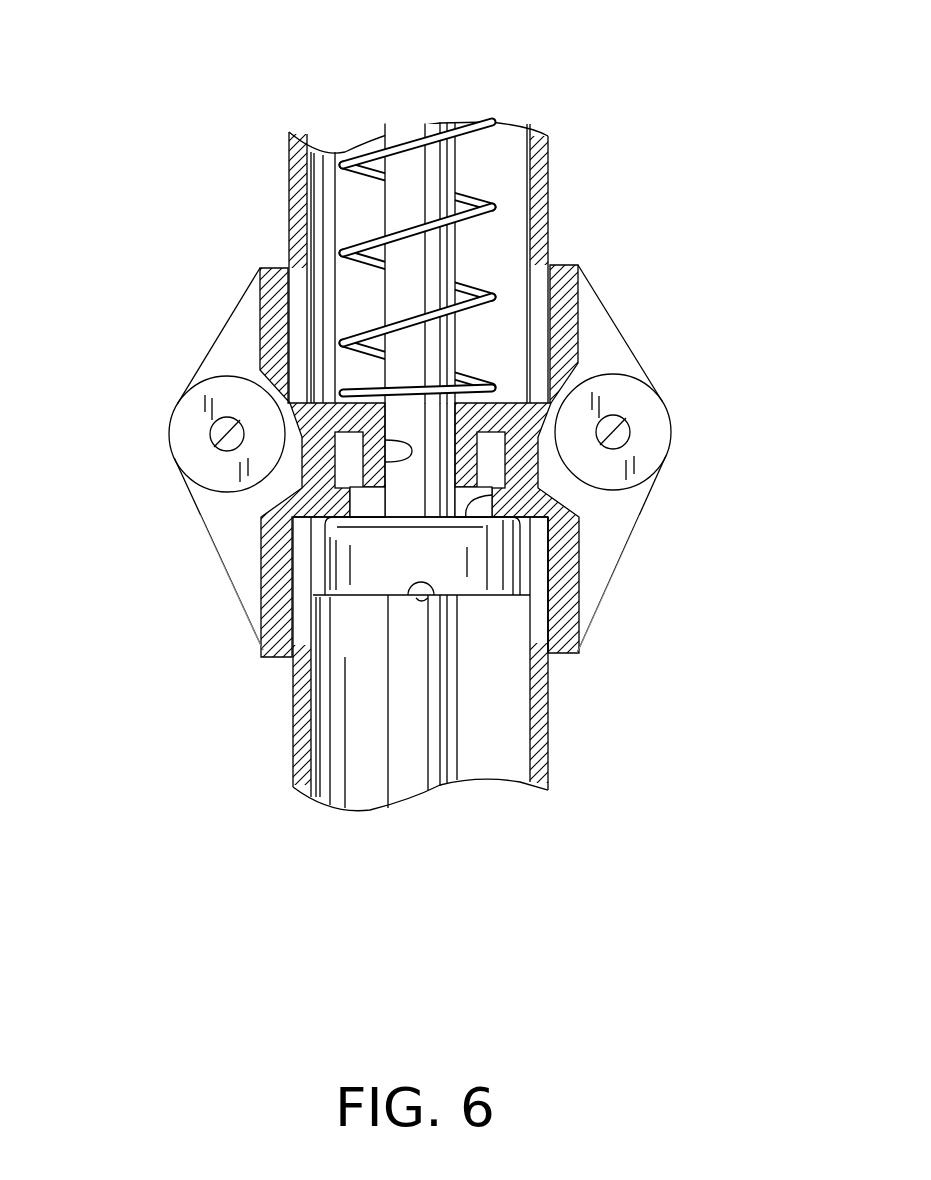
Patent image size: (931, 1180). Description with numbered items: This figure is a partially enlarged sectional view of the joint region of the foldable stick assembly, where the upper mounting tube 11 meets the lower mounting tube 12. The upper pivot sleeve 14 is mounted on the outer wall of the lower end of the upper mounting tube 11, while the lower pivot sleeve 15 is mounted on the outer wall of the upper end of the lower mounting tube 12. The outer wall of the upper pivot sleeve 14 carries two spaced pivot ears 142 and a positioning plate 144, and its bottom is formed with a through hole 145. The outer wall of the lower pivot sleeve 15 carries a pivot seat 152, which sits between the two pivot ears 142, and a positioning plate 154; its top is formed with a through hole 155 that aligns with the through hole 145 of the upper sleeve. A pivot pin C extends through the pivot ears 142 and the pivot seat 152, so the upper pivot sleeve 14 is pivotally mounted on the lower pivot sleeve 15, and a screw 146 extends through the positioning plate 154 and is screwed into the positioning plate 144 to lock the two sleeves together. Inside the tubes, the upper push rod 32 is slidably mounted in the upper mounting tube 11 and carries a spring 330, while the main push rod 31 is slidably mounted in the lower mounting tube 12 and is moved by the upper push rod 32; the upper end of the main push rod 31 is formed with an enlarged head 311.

The upper mounting tube 11 is at (289, 195).
The lower mounting tube 12 is at (300, 787).
The upper pivot sleeve 14 is at (560, 266).
The pivot ears 142 is at (232, 340).
The positioning plate 144 is at (623, 353).
The through hole 145 is at (388, 464).
The screw 146 is at (637, 423).
The lower pivot sleeve 15 is at (570, 648).
The pivot seat 152 is at (233, 570).
The positioning plate 154 is at (617, 527).
The through hole 155 is at (557, 528).
The main push rod 31 is at (428, 790).
The enlarged head 311 is at (535, 572).
The upper push rod 32 is at (420, 173).
The spring 330 is at (466, 200).
The pivot pin C is at (209, 432).